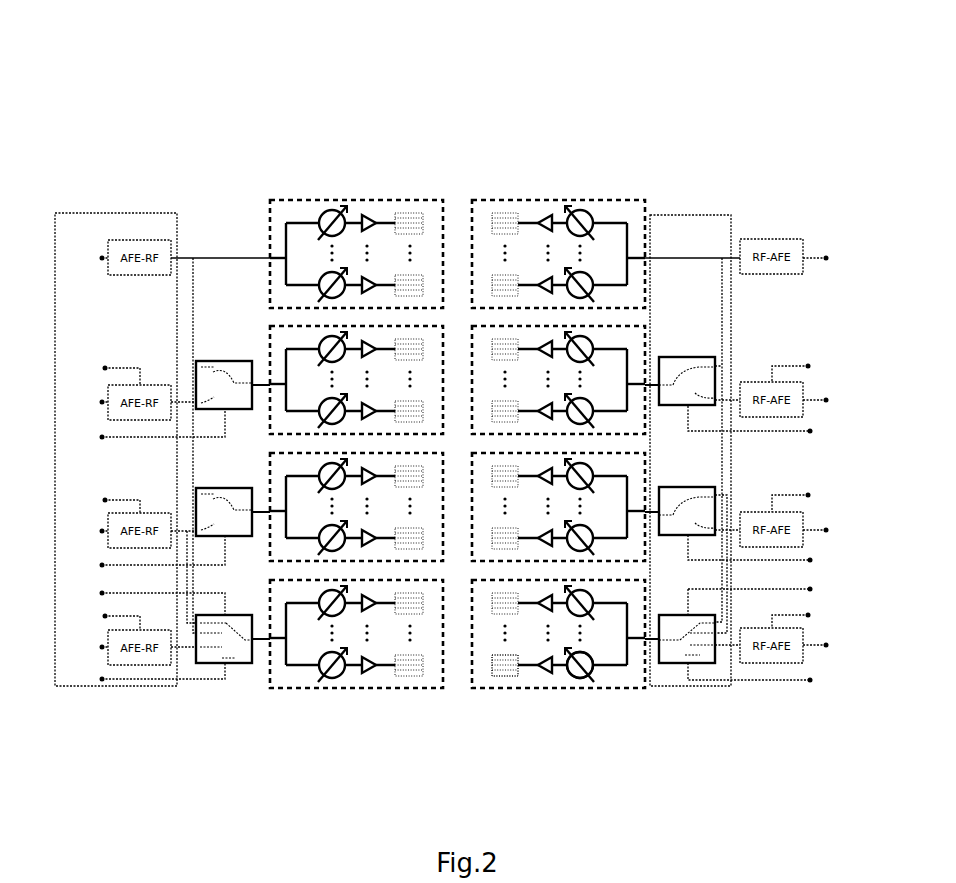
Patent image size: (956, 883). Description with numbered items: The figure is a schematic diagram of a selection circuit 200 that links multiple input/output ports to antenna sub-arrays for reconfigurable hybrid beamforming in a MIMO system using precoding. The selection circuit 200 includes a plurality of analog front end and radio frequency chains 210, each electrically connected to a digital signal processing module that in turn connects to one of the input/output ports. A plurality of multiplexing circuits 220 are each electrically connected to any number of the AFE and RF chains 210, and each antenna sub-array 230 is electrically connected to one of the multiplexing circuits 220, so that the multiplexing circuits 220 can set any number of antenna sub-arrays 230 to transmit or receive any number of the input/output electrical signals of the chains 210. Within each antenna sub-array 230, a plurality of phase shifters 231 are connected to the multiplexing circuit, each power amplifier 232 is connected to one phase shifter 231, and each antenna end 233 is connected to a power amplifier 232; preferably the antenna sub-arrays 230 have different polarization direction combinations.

The selection circuit 200 is at (488, 34).
The analog front end and radio frequency chain 210 is at (143, 237).
The multiplexing circuit 220 is at (682, 230).
The antenna sub-array 230 is at (328, 215).
The phase shifter 231 is at (312, 663).
The power amplifier 232 is at (563, 663).
The antenna end 233 is at (497, 663).